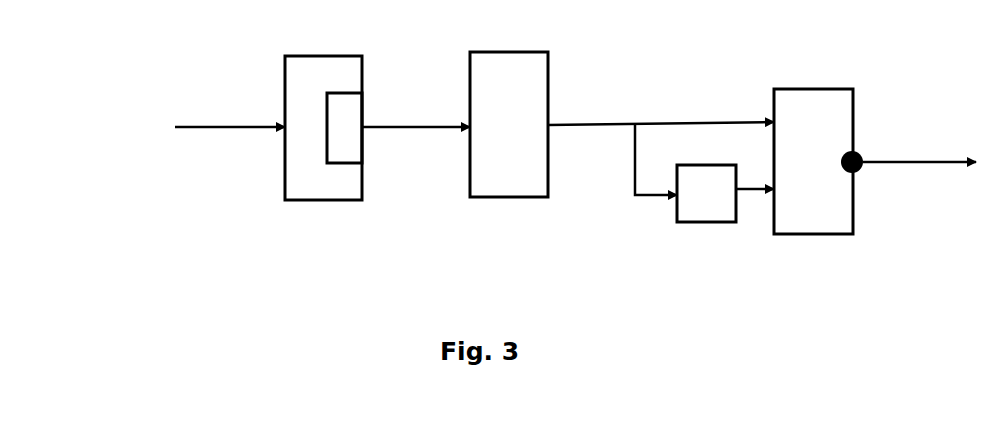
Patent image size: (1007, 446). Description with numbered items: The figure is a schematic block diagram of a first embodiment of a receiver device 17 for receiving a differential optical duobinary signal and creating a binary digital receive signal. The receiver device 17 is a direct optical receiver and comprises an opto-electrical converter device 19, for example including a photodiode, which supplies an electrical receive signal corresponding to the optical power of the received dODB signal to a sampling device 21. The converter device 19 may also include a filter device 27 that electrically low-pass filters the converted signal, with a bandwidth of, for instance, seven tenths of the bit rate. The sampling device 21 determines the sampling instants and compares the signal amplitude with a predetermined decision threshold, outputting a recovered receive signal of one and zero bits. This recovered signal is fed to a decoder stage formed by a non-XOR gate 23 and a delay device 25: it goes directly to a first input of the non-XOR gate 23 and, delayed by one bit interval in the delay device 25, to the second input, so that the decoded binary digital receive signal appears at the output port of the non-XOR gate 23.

The receiver device 17 is at (674, 31).
The opto-electrical converter device 19 is at (330, 60).
The filter device 27 is at (356, 109).
The sampling device 21 is at (499, 57).
The delay device 25 is at (716, 216).
The non-XOR gate 23 is at (820, 94).